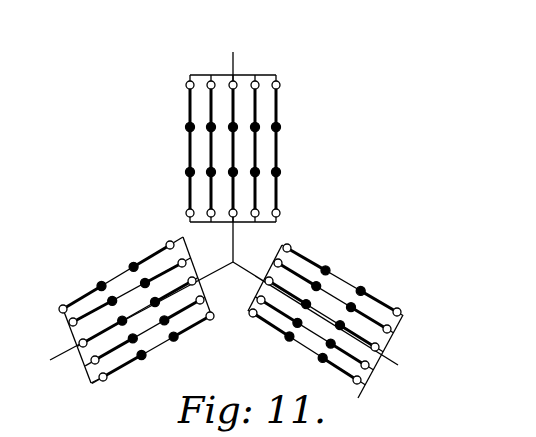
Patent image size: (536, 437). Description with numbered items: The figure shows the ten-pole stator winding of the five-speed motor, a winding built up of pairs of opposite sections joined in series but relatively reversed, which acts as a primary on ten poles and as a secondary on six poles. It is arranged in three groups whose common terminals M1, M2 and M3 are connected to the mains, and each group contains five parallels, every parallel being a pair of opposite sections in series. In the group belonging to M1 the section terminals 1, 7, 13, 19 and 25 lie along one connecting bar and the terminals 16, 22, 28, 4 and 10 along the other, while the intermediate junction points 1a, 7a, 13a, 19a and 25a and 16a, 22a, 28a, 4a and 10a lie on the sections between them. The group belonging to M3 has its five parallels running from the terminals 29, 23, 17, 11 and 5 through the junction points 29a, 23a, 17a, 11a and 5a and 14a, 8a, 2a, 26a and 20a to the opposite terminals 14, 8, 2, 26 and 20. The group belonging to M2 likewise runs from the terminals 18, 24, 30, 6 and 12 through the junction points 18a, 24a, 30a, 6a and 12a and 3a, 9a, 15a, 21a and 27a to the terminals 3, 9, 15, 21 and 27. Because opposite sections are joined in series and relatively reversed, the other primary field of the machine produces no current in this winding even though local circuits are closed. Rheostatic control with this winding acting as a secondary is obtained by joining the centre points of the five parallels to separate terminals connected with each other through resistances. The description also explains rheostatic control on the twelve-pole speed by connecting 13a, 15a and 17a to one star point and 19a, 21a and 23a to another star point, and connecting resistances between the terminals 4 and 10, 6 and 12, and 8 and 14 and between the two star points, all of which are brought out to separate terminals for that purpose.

The mains terminal M1 is at (233, 140).
The mains terminal M2 is at (340, 321).
The mains terminal M3 is at (132, 310).
The coil terminal 1 is at (187, 80).
The coil terminal 7 is at (208, 80).
The coil terminal 13 is at (227, 80).
The coil terminal 19 is at (250, 80).
The coil terminal 25 is at (284, 84).
The coil tap 1a is at (183, 123).
The coil tap 7a is at (205, 124).
The winding tap point 13a is at (226, 122).
The winding tap point 19a is at (249, 122).
The coil tap 25a is at (287, 127).
The coil tap 16a is at (181, 168).
The coil tap 22a is at (205, 167).
The coil tap 28a is at (226, 168).
The coil tap 4a is at (251, 168).
The coil tap 10a is at (287, 172).
The coil terminal 16 is at (183, 212).
The coil terminal 22 is at (205, 212).
The coil terminal 28 is at (227, 212).
The section terminal 4 is at (251, 212).
The section terminal 10 is at (284, 214).
The coil terminal 29 is at (56, 303).
The coil tap 29a is at (93, 279).
The coil tap 14a is at (126, 259).
The section terminal 14 is at (166, 239).
The coil terminal 23 is at (73, 316).
The winding tap point 23a is at (107, 294).
The coil tap 8a is at (142, 276).
The section terminal 8 is at (179, 257).
The coil terminal 17 is at (81, 337).
The winding tap point 17a is at (118, 314).
The coil tap 2a is at (152, 296).
The coil terminal 2 is at (190, 275).
The coil terminal 11 is at (93, 354).
The coil tap 11a is at (132, 332).
The coil tap 26a is at (160, 314).
The coil terminal 26 is at (196, 294).
The coil terminal 5 is at (106, 382).
The coil tap 5a is at (145, 362).
The coil tap 20a is at (183, 343).
The coil terminal 20 is at (215, 323).
The coil terminal 18 is at (293, 242).
The coil tap 18a is at (332, 264).
The coil tap 3a is at (365, 284).
The coil terminal 3 is at (401, 307).
The coil terminal 24 is at (285, 259).
The coil tap 24a is at (323, 281).
The coil tap 9a is at (356, 302).
The coil terminal 9 is at (389, 324).
The coil terminal 30 is at (275, 277).
The coil tap 30a is at (312, 299).
The winding tap point 15a is at (344, 320).
The coil terminal 15 is at (379, 342).
The section terminal 6 is at (264, 295).
The coil tap 6a is at (301, 317).
The winding tap point 21a is at (332, 338).
The coil terminal 21 is at (368, 360).
The section terminal 12 is at (247, 317).
The coil tap 12a is at (287, 343).
The coil tap 27a is at (316, 365).
The coil terminal 27 is at (353, 386).